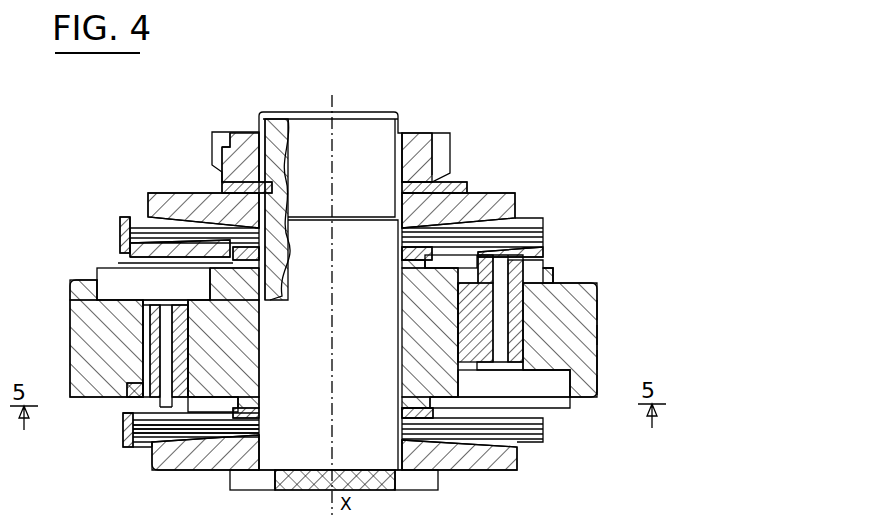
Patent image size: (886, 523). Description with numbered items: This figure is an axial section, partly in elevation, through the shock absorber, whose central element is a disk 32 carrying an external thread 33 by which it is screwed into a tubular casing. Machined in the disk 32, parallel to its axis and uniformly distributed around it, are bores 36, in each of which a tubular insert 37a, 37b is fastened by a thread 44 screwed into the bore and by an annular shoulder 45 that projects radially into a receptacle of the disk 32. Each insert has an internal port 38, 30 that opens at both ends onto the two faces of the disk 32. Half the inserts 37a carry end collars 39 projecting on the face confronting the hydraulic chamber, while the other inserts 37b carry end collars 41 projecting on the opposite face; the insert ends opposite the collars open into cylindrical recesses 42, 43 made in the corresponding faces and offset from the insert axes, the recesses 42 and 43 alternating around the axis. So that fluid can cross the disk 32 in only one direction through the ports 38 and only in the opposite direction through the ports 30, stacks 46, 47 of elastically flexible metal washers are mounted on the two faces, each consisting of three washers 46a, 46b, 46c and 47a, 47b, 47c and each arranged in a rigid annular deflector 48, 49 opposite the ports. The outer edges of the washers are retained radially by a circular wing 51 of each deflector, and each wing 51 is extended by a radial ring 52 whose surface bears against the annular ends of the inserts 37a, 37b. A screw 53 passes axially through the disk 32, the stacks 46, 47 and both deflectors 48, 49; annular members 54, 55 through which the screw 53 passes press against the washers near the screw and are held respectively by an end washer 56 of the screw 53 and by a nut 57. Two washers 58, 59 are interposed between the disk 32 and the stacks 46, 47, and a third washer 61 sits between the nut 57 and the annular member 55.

The internal port 30 is at (105, 368).
The disk 32 is at (599, 355).
The external thread 33 is at (599, 330).
The bore 36 is at (145, 312).
The tubular insert 37a is at (599, 385).
The tubular insert 37b is at (145, 340).
The internal port 38 is at (545, 312).
The end collar 39 is at (545, 268).
The end collar 41 is at (133, 414).
The recess 42 is at (548, 394).
The recess 43 is at (120, 283).
The thread 44 is at (599, 310).
The annular shoulder 45 is at (132, 396).
The stack of washers 46 is at (122, 442).
The washer 46a is at (135, 426).
The washer 46b is at (150, 430).
The washer 46c is at (168, 435).
The stack of washers 47 is at (140, 215).
The washer 47a is at (148, 226).
The washer 47b is at (167, 235).
The washer 47c is at (188, 238).
The annular deflector 48 is at (125, 442).
The annular deflector 49 is at (120, 226).
The circular wing 51 is at (478, 260).
The radial ring 52 is at (542, 238).
The screw 53 is at (323, 291).
The annular member 54 is at (200, 455).
The annular member 55 is at (475, 205).
The end washer 56 is at (418, 484).
The nut 57 is at (418, 140).
The washer 58 is at (250, 472).
The washer 59 is at (420, 257).
The washer 61 is at (229, 146).